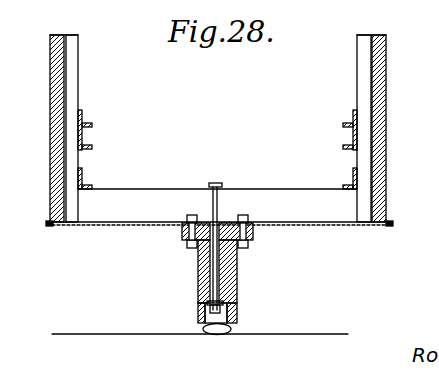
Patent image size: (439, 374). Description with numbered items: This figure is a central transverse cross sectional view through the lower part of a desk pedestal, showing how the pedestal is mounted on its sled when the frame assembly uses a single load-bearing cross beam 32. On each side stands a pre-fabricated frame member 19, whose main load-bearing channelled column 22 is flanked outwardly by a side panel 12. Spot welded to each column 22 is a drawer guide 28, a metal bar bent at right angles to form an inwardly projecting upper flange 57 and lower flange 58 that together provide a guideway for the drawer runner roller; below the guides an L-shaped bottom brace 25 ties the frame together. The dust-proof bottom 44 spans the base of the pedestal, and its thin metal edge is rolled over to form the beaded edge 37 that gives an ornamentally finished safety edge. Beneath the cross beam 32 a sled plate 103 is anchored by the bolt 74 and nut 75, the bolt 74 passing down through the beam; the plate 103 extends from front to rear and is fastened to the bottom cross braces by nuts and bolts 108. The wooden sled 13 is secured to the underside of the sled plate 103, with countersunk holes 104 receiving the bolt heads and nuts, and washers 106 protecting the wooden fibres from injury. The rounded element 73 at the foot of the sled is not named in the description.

The side panel 12 is at (55, 152).
The sled 13 is at (237, 283).
The pre-fabricated frame member 19 is at (80, 62).
The load-bearing channelled column 22 is at (74, 83).
The L-shaped bottom brace 25 is at (84, 181).
The drawer guide 28 is at (82, 136).
The load-bearing cross beam 32 is at (258, 192).
The beaded edge 37 is at (49, 227).
The dust-proof bottom 44 is at (125, 226).
The upper flange 57 is at (86, 124).
The lower flange 58 is at (88, 148).
The ball 73 is at (217, 334).
The bolt 74 is at (216, 183).
The nut 75 is at (229, 313).
The sled plate 103 is at (186, 231).
The countersunk hole 104 is at (204, 309).
The washer 106 is at (224, 306).
The nuts and bolts 108 is at (255, 238).